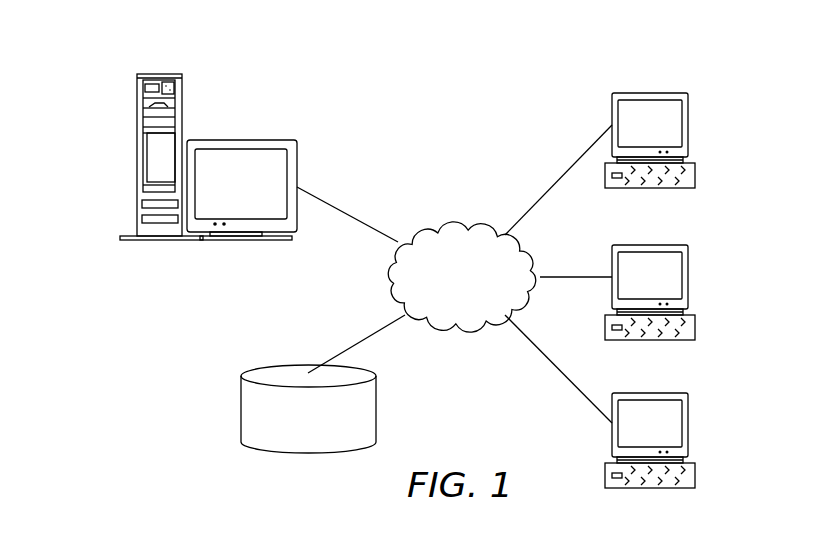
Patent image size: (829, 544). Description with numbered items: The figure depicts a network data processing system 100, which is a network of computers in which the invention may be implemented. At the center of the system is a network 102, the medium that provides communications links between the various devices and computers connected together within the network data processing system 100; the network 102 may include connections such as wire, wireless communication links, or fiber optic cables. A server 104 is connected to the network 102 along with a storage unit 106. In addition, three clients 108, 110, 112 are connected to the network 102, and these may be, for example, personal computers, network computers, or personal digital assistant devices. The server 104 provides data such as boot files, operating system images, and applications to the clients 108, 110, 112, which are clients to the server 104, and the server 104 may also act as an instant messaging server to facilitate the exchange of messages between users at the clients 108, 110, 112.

The network data processing system 100 is at (518, 99).
The network 102 is at (433, 225).
The server 104 is at (137, 158).
The storage unit 106 is at (241, 408).
The client 108 is at (688, 123).
The client 110 is at (688, 277).
The client 112 is at (688, 425).